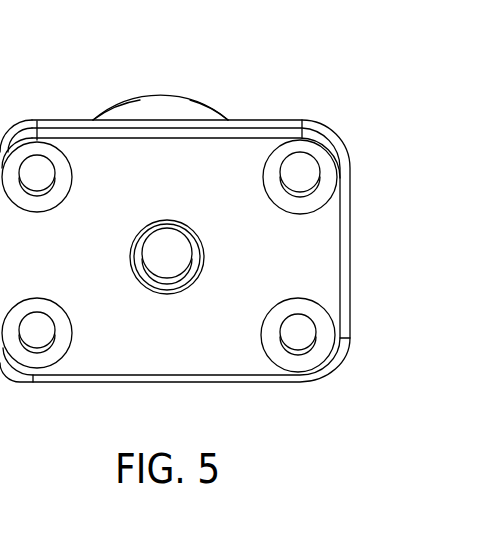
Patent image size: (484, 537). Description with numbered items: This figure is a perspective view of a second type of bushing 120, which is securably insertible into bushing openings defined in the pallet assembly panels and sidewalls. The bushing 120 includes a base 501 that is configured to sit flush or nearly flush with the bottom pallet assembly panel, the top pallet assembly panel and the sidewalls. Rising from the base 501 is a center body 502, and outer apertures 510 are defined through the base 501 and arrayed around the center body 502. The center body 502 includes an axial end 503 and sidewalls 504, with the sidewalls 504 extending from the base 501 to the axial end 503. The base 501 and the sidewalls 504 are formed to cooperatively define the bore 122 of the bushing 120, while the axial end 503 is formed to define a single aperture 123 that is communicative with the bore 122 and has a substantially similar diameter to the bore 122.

The bushing 120 is at (323, 127).
The bore 122 is at (172, 253).
The aperture 123 is at (180, 277).
The base 501 is at (85, 163).
The center body 502 is at (187, 108).
The axial end 503 is at (162, 92).
The sidewalls 504 is at (150, 118).
The outer apertures 510 is at (298, 172).